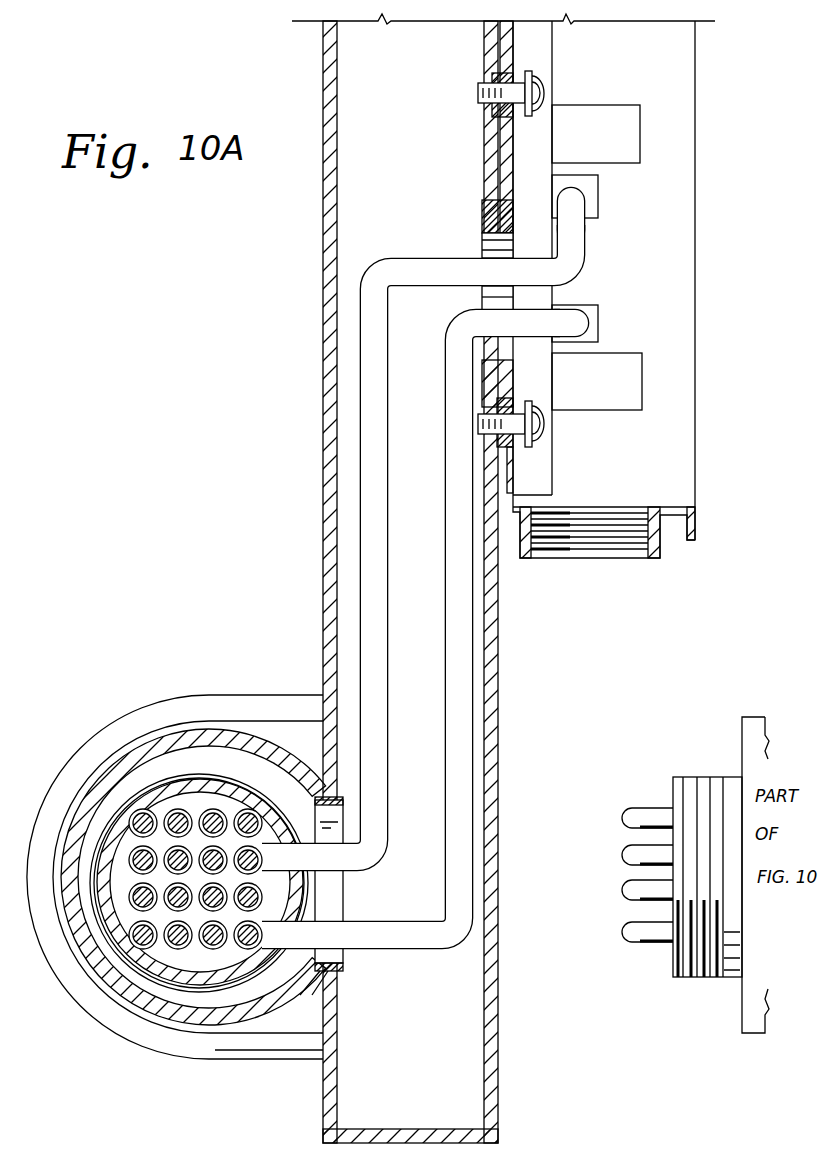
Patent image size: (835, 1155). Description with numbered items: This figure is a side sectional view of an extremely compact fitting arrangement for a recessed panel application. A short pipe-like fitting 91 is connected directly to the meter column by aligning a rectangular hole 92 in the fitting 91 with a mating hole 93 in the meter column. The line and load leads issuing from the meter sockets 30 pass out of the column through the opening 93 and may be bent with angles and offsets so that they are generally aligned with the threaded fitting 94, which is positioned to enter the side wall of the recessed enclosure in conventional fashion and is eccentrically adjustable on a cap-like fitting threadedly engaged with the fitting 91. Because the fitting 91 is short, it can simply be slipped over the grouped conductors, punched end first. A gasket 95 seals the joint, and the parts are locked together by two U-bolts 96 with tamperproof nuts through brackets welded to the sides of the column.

The meter socket 30 is at (703, 270).
The pipe-like fitting 91 is at (135, 1005).
The rectangular hole 92 is at (336, 828).
The mating hole 93 is at (340, 993).
The threaded fitting 94 is at (86, 810).
The gasket 95 is at (344, 957).
The U-bolt 96 is at (80, 750).